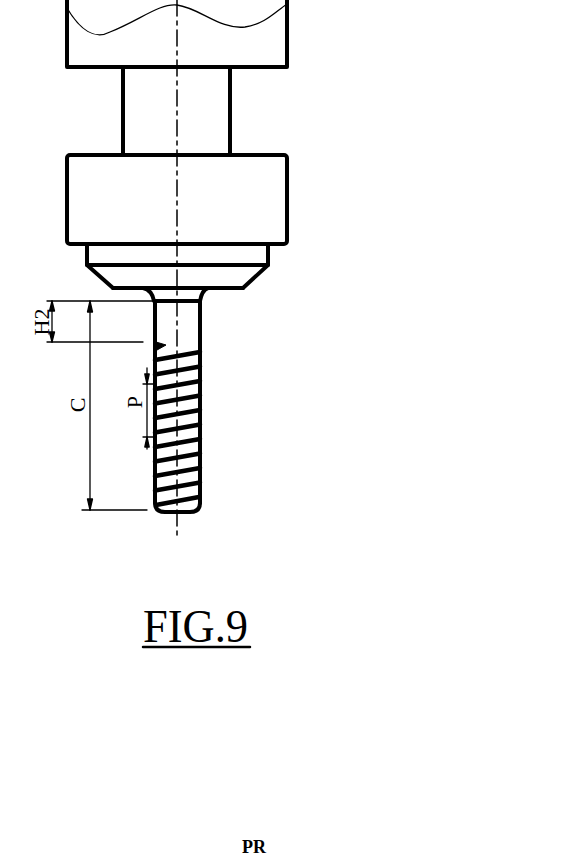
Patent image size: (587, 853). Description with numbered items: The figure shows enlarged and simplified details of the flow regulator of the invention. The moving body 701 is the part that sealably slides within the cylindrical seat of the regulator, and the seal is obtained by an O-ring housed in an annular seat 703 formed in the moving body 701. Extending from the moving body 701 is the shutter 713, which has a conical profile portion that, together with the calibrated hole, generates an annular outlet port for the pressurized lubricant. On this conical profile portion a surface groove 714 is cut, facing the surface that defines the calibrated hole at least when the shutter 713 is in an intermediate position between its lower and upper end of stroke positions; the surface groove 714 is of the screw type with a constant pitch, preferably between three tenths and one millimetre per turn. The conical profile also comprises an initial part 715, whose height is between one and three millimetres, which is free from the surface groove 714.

The moving body 701 is at (223, 203).
The annular seat 703 is at (212, 108).
The shutter 713 is at (192, 483).
The surface groove 714 is at (200, 425).
The initial part 715 is at (185, 333).